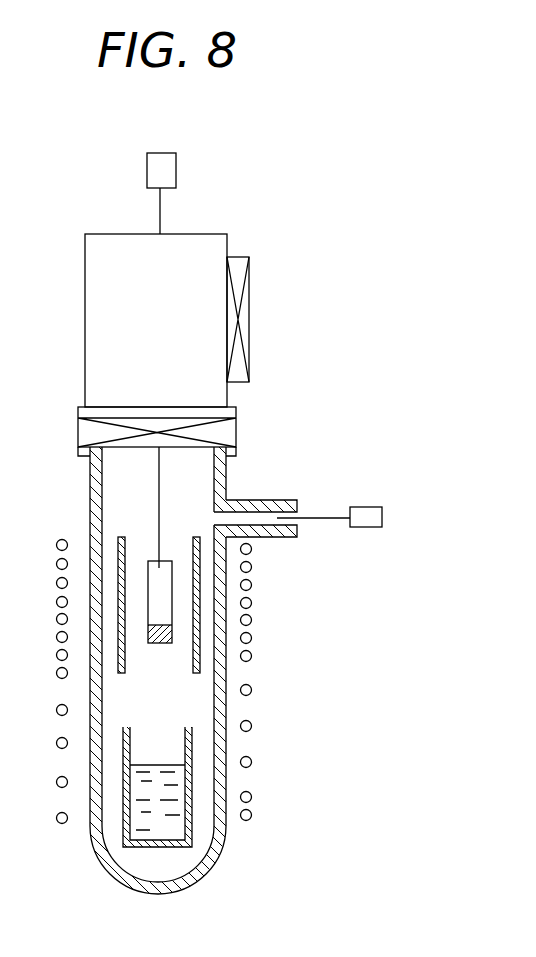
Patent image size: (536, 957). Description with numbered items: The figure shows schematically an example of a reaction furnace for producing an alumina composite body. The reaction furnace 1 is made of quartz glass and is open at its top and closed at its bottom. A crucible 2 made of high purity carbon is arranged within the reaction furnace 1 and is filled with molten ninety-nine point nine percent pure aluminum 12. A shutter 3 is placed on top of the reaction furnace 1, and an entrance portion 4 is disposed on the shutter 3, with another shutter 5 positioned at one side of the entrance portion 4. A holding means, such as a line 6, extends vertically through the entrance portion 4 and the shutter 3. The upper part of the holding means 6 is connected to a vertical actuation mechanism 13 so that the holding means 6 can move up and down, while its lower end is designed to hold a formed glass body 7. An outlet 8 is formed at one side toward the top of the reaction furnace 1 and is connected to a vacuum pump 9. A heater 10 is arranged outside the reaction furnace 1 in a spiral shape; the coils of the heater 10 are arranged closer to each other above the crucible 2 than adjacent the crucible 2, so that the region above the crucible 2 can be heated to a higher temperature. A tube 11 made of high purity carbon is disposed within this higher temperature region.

The reaction furnace 1 is at (218, 852).
The crucible 2 is at (160, 847).
The shutter 3 is at (236, 430).
The entrance portion 4 is at (85, 337).
The shutter 5 is at (249, 339).
The holding means 6 is at (158, 493).
The formed glass body 7 is at (156, 562).
The outlet 8 is at (297, 528).
The vacuum pump 9 is at (366, 515).
The heater 10 is at (251, 729).
The tube 11 is at (200, 612).
The molten aluminum 12 is at (143, 822).
The vertical actuation mechanism 13 is at (176, 168).